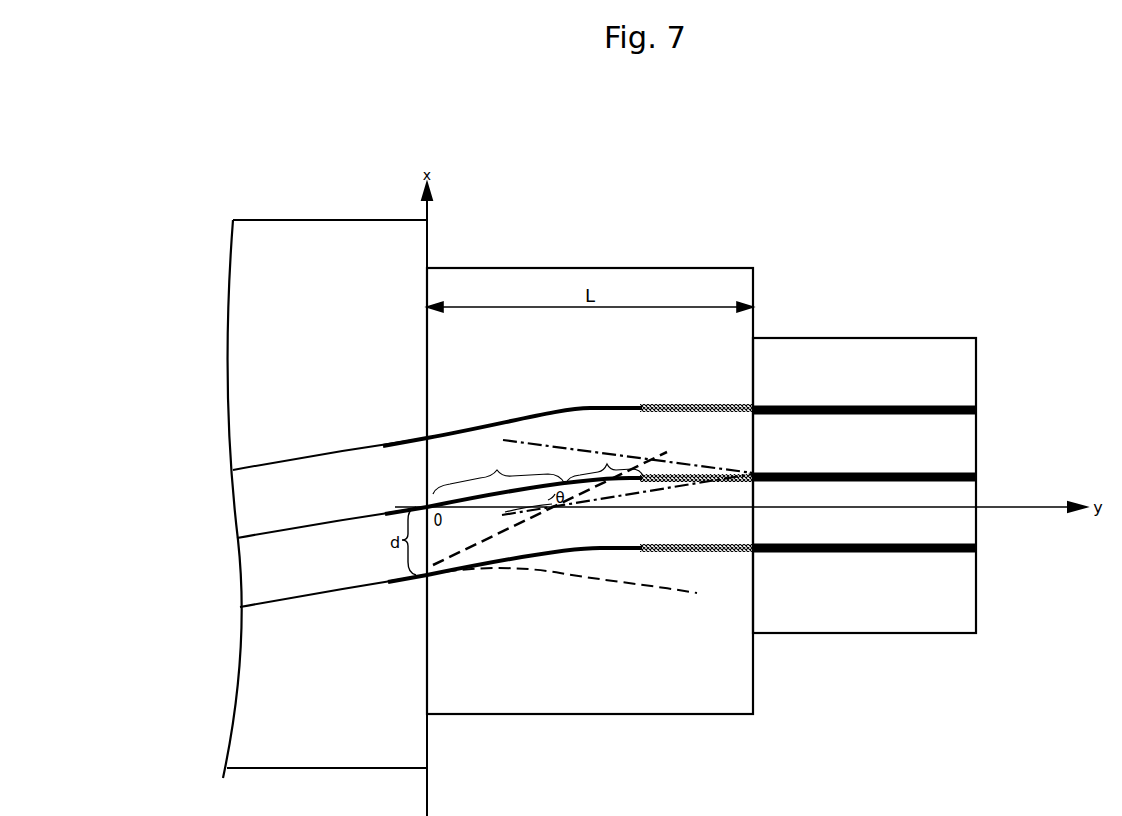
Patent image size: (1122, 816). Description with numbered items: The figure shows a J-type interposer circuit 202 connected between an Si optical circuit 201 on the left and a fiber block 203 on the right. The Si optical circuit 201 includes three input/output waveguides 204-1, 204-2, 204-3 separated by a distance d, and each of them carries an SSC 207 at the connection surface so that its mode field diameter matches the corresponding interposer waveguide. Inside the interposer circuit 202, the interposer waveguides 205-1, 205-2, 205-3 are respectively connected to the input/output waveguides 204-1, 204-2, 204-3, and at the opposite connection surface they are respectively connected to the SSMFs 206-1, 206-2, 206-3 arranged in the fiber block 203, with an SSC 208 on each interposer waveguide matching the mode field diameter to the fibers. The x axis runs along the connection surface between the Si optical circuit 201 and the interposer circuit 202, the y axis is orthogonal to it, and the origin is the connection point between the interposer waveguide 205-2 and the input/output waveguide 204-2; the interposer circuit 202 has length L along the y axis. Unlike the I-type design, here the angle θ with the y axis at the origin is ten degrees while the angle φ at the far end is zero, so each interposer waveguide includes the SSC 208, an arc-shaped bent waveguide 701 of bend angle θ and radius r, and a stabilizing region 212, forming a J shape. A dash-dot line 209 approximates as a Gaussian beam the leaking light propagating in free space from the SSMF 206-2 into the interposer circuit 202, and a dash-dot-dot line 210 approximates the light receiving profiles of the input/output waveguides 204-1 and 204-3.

The Si optical circuit 201 is at (318, 236).
The interposer circuit 202 is at (567, 270).
The fiber block 203 is at (869, 340).
The input/output waveguide 204-1 is at (322, 455).
The input/output waveguide 204-2 is at (322, 522).
The input/output waveguide 204-3 is at (322, 590).
The interposer waveguide 205-1 is at (602, 404).
The interposer waveguide 205-2 is at (634, 488).
The interposer waveguide 205-3 is at (625, 552).
The SSMF 206-1 is at (918, 406).
The SSMF 206-2 is at (918, 473).
The SSMF 206-3 is at (918, 553).
The SSC 207 is at (412, 436).
The SSC 208 is at (746, 476).
The dash-dot line 209 is at (523, 445).
The dash-dot-dot line 210 is at (657, 598).
The stabilizing region 212 is at (499, 471).
The bent waveguide 701 is at (610, 464).